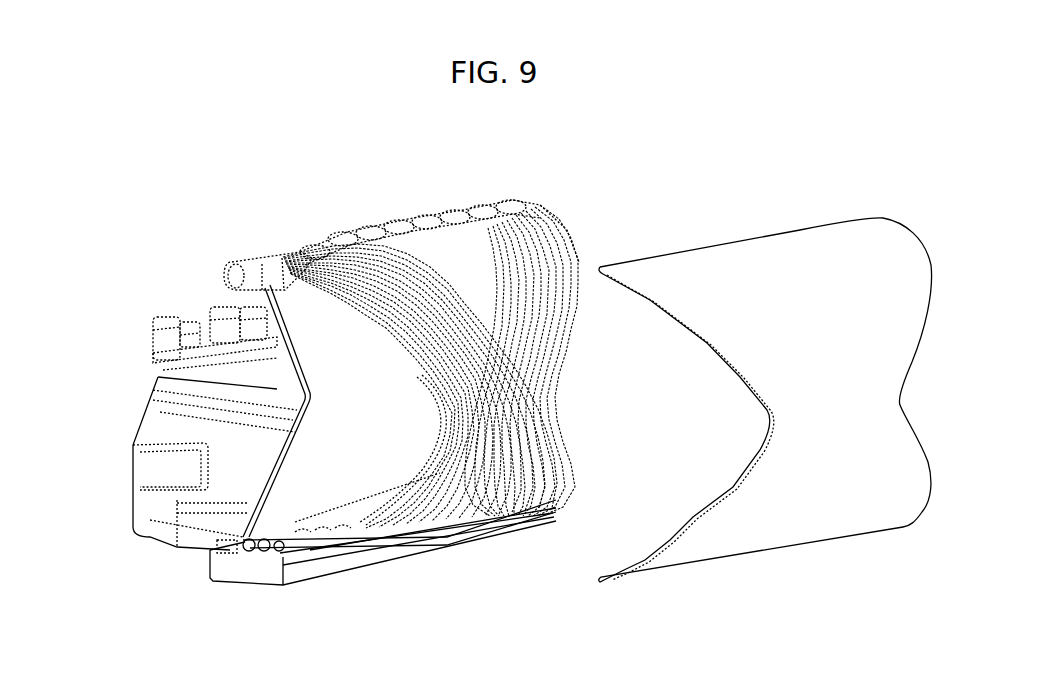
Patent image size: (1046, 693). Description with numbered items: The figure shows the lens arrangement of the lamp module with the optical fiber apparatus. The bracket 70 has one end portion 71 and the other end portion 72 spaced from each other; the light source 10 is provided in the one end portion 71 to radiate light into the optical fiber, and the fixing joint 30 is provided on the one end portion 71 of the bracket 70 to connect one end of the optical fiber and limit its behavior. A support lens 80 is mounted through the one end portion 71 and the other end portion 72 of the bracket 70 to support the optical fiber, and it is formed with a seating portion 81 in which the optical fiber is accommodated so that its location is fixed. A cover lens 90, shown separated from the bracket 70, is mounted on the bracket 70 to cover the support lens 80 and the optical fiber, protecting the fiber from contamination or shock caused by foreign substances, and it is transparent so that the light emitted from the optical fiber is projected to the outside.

The light source 10 is at (215, 485).
The fixing joint 30 is at (233, 566).
The bracket 70 is at (365, 465).
The one end portion 71 is at (307, 527).
The other end portion 72 is at (280, 307).
The support lens 80 is at (465, 250).
The seating portion 81 is at (543, 232).
The cover lens 90 is at (797, 523).